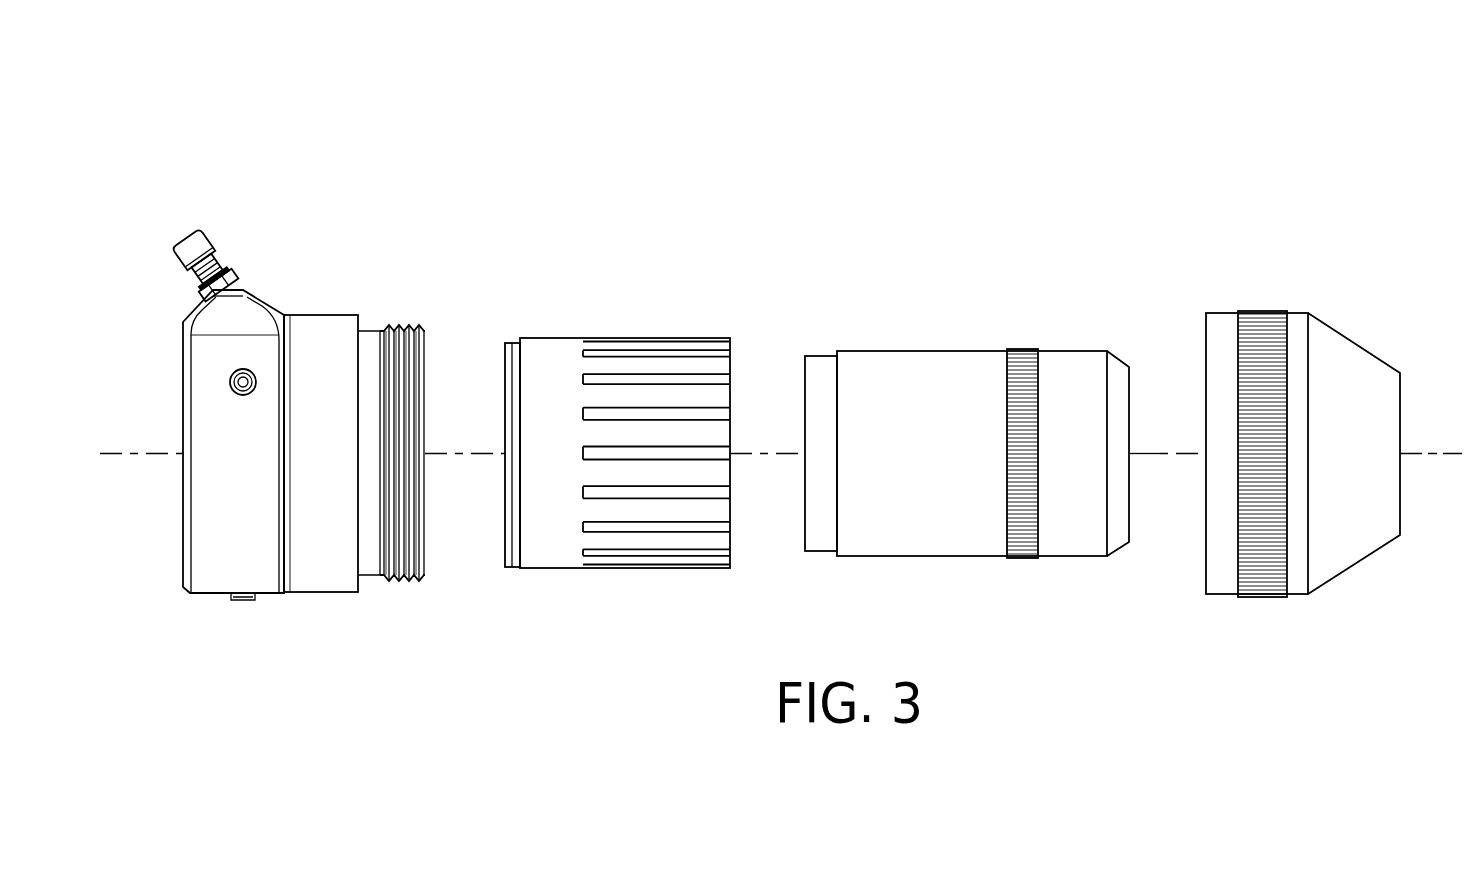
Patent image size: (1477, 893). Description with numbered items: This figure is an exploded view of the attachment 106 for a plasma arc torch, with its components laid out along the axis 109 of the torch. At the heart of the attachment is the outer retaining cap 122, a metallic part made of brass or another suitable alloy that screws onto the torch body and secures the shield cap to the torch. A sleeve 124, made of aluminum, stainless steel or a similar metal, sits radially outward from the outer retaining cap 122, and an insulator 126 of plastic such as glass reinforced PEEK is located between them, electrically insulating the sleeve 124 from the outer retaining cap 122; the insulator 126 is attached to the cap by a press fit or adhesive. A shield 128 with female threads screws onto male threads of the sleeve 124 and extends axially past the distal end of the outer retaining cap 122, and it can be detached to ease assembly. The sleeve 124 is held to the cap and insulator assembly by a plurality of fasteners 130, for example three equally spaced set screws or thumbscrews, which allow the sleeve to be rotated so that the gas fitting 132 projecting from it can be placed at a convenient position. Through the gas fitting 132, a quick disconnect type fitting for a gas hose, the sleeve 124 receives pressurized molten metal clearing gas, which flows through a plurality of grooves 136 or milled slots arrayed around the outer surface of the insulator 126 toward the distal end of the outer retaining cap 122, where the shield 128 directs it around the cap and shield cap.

The attachment 106 is at (660, 170).
The axis 109 is at (1453, 456).
The outer retaining cap 122 is at (935, 350).
The sleeve 124 is at (328, 594).
The insulator 126 is at (544, 569).
The shield 128 is at (1296, 312).
The fasteners 130 is at (229, 380).
The gas fitting 132 is at (184, 252).
The grooves 136 is at (722, 380).